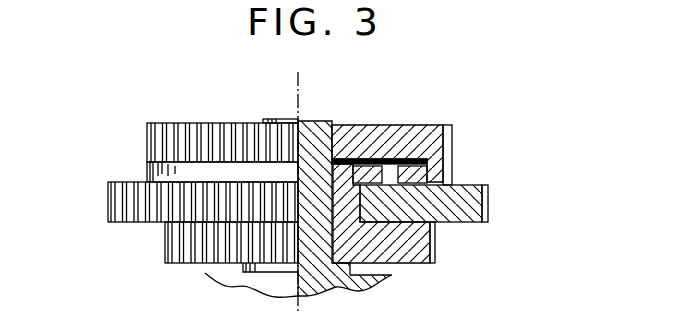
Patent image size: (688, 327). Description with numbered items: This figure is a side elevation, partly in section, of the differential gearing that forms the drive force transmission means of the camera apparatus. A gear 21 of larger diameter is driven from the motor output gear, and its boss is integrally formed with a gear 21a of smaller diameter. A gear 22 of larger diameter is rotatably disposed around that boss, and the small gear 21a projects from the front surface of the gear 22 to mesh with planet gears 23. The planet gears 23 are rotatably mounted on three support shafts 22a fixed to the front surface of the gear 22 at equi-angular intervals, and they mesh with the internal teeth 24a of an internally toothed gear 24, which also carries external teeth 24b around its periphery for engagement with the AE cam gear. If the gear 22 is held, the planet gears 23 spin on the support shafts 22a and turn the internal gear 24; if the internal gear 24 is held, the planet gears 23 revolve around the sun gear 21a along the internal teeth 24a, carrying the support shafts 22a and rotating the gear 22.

The gear of a larger diameter 21 is at (408, 258).
The gear of a smaller diameter 21a is at (354, 163).
The gear of a larger diameter 22 is at (458, 213).
The support shafts 22a is at (391, 170).
The planet gears 23 is at (419, 178).
The internally toothed gear 24 is at (372, 125).
The internal teeth 24a is at (431, 173).
The external teeth 24b is at (177, 124).